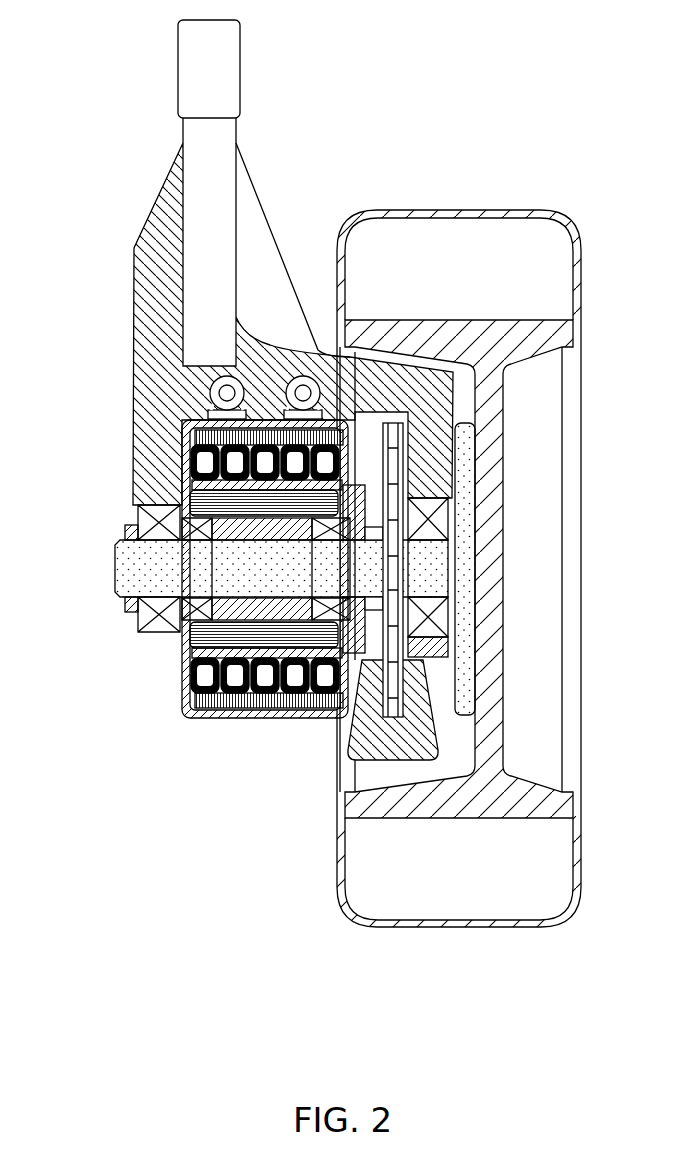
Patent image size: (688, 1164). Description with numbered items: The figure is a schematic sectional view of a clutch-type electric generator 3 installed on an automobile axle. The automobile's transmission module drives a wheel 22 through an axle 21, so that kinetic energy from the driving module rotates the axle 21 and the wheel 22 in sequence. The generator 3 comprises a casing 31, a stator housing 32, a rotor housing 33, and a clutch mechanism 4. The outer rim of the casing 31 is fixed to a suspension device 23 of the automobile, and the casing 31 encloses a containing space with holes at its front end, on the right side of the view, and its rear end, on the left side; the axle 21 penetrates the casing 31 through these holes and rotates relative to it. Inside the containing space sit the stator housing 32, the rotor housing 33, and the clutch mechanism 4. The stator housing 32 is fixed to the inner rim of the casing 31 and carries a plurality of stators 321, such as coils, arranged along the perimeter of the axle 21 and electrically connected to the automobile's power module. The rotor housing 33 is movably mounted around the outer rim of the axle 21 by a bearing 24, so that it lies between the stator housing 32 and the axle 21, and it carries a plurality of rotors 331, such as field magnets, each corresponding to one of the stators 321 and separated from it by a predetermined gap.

The axle 21 is at (148, 566).
The wheel 22 is at (494, 211).
The suspension device 23 is at (158, 218).
The bearing 24 is at (172, 604).
The clutch-type electric generator 3 is at (196, 659).
The casing 31 is at (253, 714).
The stator housing 32 is at (200, 623).
The stator 321 is at (205, 462).
The rotor housing 33 is at (196, 653).
The rotor 331 is at (200, 503).
The clutch mechanism 4 is at (374, 648).